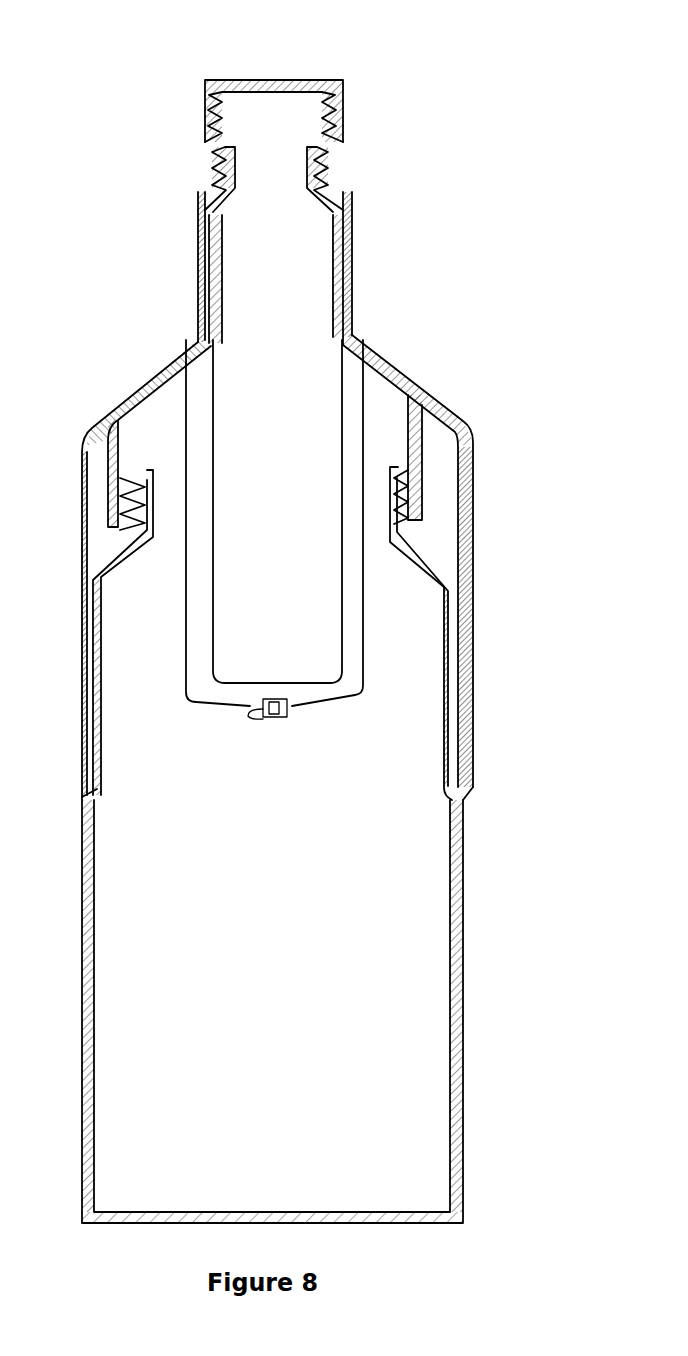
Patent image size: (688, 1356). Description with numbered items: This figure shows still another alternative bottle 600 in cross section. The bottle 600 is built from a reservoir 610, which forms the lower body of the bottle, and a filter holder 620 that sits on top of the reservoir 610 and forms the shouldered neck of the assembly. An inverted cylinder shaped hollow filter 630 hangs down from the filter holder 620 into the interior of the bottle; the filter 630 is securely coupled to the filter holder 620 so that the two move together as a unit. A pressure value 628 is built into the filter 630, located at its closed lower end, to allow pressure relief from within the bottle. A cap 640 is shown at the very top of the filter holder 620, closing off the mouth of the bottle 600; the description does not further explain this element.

The bottle 600 is at (453, 162).
The reservoir 610 is at (402, 938).
The filter holder 620 is at (403, 380).
The pressure value 628 is at (287, 710).
The filter 630 is at (350, 587).
The top cap 640 is at (332, 82).